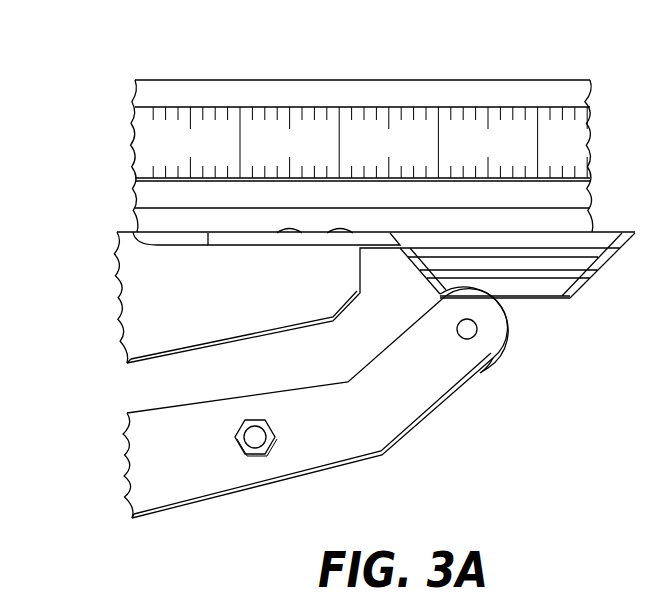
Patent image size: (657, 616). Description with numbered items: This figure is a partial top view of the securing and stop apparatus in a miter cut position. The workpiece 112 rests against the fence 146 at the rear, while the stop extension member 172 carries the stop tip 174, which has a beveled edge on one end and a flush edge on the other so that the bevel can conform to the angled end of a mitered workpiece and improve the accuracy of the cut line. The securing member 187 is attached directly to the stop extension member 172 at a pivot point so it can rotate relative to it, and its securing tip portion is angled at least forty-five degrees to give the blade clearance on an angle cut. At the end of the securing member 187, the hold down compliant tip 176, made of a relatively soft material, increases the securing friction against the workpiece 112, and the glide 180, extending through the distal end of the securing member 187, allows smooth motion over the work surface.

The workpiece 112 is at (505, 262).
The fence 146 is at (218, 218).
The stop extension member 172 is at (138, 303).
The stop tip 174 is at (305, 237).
The hold down compliant tip 176 is at (510, 332).
The glide 180 is at (265, 437).
The securing member 187 is at (152, 453).